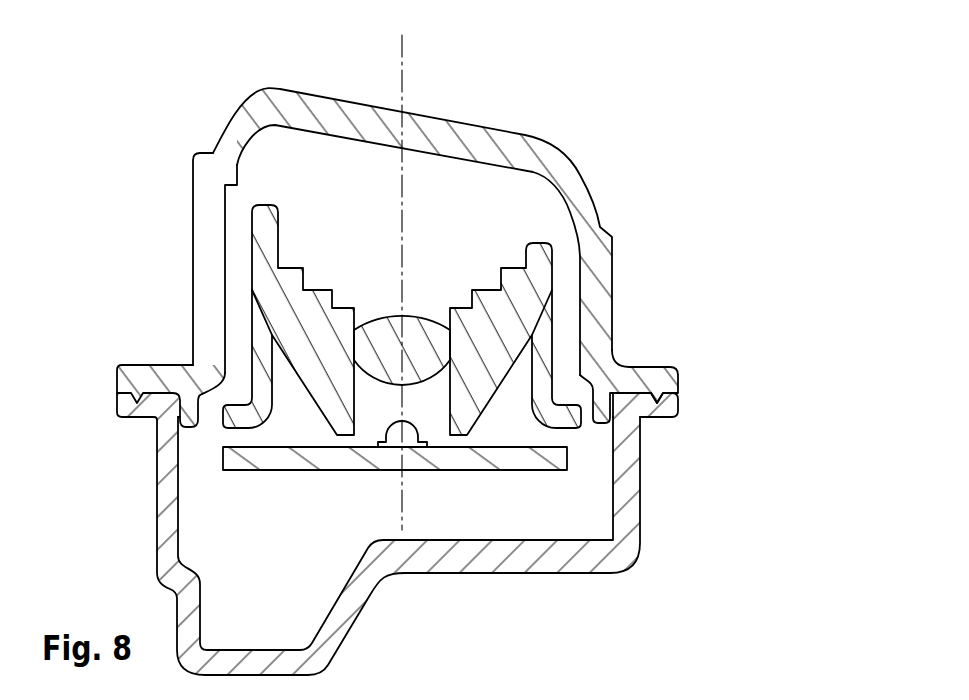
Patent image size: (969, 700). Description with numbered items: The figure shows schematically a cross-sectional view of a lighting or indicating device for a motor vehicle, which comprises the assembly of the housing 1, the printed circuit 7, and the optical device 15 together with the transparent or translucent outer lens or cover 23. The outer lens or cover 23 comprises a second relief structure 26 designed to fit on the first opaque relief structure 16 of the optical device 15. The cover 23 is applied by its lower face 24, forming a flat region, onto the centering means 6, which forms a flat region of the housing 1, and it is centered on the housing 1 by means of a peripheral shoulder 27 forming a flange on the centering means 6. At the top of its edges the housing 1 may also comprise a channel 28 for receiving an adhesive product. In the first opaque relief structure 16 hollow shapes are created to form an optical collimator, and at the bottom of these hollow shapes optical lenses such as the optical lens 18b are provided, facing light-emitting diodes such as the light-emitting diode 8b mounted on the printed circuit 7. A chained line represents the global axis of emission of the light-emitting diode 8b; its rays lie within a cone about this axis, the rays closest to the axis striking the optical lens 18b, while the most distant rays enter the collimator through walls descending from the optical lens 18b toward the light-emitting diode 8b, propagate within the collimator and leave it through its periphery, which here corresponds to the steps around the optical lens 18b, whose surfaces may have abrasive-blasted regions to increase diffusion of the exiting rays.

The housing 1 is at (405, 522).
The transparent or translucent outer lens or cover 23 is at (367, 240).
The second relief structure 26 is at (192, 245).
The lower face 24 is at (635, 393).
The centering means 6 is at (160, 392).
The peripheral shoulder 27 is at (187, 458).
The channel 28 is at (680, 393).
The first opaque relief structure 16 is at (556, 255).
The optical device 15 is at (455, 297).
The optical lens 18b is at (388, 327).
The printed circuit 7 is at (527, 465).
The light-emitting diode 8b is at (407, 437).